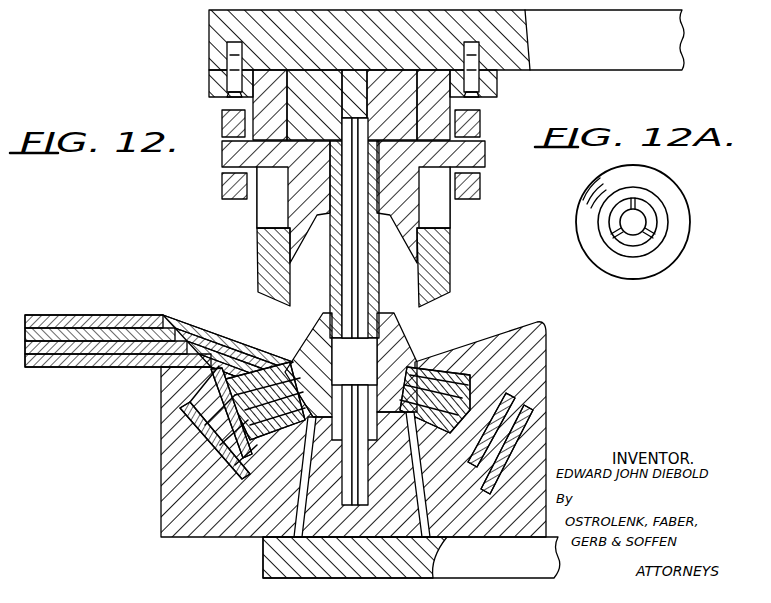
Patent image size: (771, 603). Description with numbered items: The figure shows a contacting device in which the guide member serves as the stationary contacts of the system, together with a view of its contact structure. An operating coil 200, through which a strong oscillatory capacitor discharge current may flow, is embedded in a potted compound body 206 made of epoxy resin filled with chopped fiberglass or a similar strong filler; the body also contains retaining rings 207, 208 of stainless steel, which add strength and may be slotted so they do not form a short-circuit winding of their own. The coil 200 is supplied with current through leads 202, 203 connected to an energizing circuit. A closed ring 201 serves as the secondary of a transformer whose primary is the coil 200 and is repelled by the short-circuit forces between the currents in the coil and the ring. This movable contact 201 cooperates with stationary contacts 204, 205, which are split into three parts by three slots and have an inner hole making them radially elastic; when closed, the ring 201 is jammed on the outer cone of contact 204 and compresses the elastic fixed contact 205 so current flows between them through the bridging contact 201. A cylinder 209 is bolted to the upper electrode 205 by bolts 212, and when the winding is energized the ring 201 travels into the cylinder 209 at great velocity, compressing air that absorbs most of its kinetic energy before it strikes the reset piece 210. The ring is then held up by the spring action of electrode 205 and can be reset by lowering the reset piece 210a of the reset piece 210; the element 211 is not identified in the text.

In FIG. 12, the operating coil 200 is at (455, 372).
In FIG. 12, the closed ring 201 is at (396, 348).
In FIG. 12A, the closed ring 201 is at (672, 198).
In FIG. 12, the lead 202 is at (70, 332).
In FIG. 12, the lead 203 is at (73, 363).
In FIG. 12, the stationary contact 204 is at (262, 560).
In FIG. 12, the stationary contact 205 is at (379, 288).
In FIG. 12A, the stationary contact 205 is at (633, 244).
In FIG. 12, the potted compound body 206 is at (532, 360).
In FIG. 12, the retaining ring 207 is at (508, 398).
In FIG. 12, the retaining ring 208 is at (520, 428).
In FIG. 12, the cylinder 209 is at (440, 270).
In FIG. 12, the reset piece 210 is at (399, 224).
In FIG. 12, the reset piece 210a is at (482, 118).
In FIG. 12, the block 211 is at (236, 200).
In FIG. 12, the bolt 212 is at (228, 58).